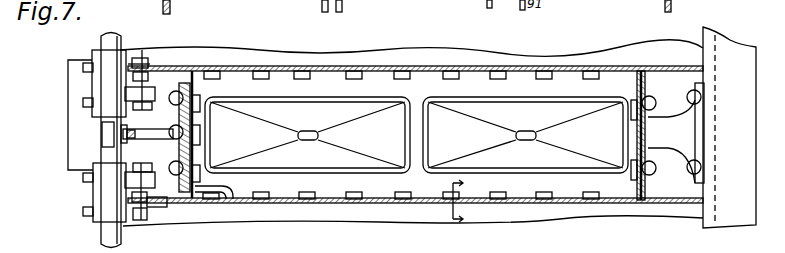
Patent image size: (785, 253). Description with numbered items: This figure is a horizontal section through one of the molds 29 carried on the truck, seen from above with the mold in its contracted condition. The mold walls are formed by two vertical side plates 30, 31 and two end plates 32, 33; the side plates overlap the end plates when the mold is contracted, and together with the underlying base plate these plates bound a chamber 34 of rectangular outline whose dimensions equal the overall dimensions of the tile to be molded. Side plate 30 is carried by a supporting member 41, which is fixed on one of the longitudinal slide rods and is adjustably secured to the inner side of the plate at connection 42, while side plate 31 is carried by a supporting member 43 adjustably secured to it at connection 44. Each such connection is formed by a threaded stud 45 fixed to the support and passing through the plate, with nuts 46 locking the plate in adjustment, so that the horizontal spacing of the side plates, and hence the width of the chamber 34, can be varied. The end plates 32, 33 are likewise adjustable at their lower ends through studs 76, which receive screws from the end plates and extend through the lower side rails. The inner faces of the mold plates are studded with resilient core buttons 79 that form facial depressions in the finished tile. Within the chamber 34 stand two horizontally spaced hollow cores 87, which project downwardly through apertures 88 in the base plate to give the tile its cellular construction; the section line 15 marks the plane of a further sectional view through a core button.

The section line 15 is at (447, 200).
The mold 29 is at (560, 90).
The vertical side plate 30 is at (369, 67).
The vertical side plate 31 is at (383, 203).
The end plate 32 is at (232, 204).
The end plate 33 is at (655, 70).
The chamber 34 is at (422, 80).
The supporting member 41 is at (100, 88).
The adjustable connection 42 is at (156, 66).
The supporting member 43 is at (94, 190).
The adjustable connection 44 is at (163, 207).
The threaded stud 45 is at (142, 57).
The nuts 46 is at (148, 63).
The stud 76 is at (149, 137).
The core buttons 79 is at (272, 78).
The hollow core 87 is at (444, 139).
The aperture 88 is at (320, 108).